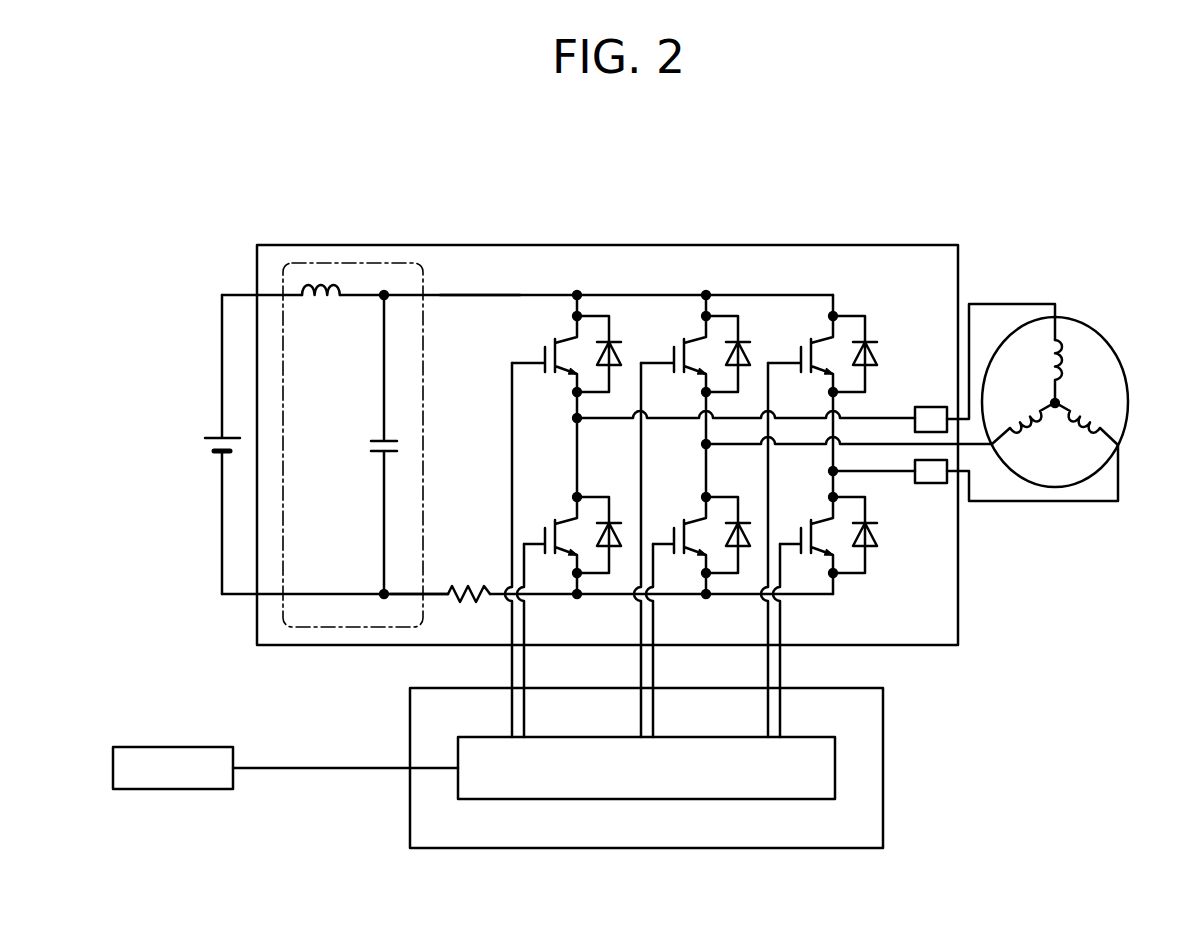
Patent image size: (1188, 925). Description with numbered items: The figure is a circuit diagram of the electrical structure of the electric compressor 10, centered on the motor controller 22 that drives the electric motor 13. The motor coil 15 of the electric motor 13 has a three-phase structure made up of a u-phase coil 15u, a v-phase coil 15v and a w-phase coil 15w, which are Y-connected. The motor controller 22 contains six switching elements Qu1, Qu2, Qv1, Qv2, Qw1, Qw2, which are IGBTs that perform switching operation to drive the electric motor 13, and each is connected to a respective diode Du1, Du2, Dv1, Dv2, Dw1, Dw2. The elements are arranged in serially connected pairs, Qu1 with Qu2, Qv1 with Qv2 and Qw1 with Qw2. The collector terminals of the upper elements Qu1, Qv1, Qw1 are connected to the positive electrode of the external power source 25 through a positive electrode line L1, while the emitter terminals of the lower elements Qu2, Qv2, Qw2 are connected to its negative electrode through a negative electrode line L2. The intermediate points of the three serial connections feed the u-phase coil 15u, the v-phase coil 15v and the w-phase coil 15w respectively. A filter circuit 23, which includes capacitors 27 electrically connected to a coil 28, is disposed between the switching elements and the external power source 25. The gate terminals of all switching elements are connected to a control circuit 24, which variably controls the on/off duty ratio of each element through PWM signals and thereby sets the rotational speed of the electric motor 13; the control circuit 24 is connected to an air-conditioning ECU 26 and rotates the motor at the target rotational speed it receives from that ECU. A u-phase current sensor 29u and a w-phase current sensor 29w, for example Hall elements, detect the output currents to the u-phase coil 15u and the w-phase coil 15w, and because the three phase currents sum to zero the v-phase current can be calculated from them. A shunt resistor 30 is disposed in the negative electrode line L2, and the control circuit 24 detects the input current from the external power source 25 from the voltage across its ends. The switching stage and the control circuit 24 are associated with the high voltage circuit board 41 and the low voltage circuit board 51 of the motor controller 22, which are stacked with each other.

The electric compressor drive system 10 is at (1006, 246).
The electric motor 13 is at (1071, 299).
The motor coil 15 is at (1078, 322).
The u-phase coil 15u is at (1064, 360).
The v-phase coil 15v is at (1022, 430).
The w-phase coil 15w is at (1092, 413).
The motor controller 22 is at (873, 228).
The filter circuit 23 is at (400, 262).
The control circuit 24 is at (798, 737).
The external power source 25 is at (212, 436).
The air-conditioning ECU 26 is at (190, 746).
The capacitors 27 is at (377, 440).
The coil 28 is at (327, 299).
The u-phase current sensor 29u is at (930, 406).
The w-phase current sensor 29w is at (931, 484).
The shunt resistor 30 is at (459, 580).
The high voltage circuit board 41 is at (814, 244).
The low voltage circuit board 51 is at (845, 687).
The positive electrode line L1 is at (481, 293).
The negative electrode line L2 is at (405, 598).
The switching element Qu1 is at (545, 356).
The switching element Qu2 is at (552, 536).
The switching element Qv1 is at (674, 356).
The switching element Qv2 is at (681, 536).
The switching element Qw1 is at (803, 356).
The switching element Qw2 is at (808, 536).
The diode Du1 is at (606, 340).
The diode Du2 is at (608, 521).
The diode Dv1 is at (735, 340).
The diode Dv2 is at (737, 521).
The diode Dw1 is at (877, 340).
The diode Dw2 is at (876, 548).